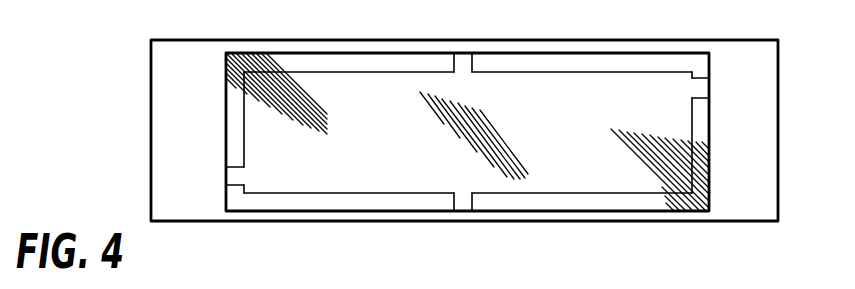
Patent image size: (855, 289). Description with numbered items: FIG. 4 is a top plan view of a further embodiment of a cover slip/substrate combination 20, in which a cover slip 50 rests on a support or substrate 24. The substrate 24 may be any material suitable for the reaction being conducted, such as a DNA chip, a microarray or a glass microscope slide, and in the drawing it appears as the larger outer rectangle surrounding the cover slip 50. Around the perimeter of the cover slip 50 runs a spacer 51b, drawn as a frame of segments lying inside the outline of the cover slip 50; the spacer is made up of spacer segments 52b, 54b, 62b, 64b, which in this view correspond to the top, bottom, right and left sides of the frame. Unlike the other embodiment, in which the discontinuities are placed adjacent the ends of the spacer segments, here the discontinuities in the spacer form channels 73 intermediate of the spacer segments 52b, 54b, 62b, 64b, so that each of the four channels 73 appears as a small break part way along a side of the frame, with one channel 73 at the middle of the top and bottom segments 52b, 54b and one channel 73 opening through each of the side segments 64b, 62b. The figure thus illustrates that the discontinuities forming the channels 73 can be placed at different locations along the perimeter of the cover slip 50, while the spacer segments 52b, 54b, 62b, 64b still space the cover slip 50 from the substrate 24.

The cover slip/substrate combination 20 is at (100, 119).
The substrate 24 is at (732, 223).
The cover slip 50 is at (713, 148).
The first frame wall 51b is at (493, 75).
The spacer segment 52b is at (390, 73).
The spacer segment 54b is at (369, 192).
The spacer segment 62b is at (690, 99).
The spacer segment 64b is at (247, 150).
The channel 73 is at (463, 58).